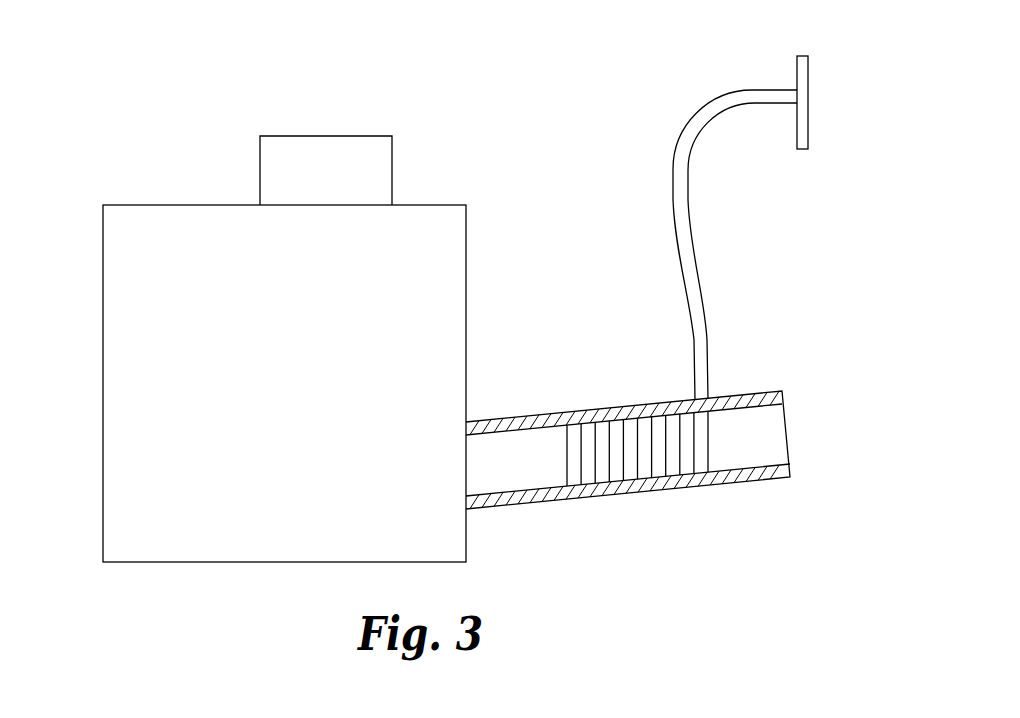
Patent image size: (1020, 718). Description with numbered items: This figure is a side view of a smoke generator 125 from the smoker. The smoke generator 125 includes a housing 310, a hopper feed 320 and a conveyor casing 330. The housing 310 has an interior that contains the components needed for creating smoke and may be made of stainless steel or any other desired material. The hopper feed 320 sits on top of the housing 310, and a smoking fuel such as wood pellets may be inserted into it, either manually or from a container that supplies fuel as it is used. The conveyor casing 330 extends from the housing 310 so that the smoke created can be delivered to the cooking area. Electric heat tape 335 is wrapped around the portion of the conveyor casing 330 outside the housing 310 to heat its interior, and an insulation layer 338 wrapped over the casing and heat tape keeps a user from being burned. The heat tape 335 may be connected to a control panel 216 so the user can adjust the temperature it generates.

The smoke generator 125 is at (135, 86).
The housing 310 is at (148, 302).
The hopper feed 320 is at (373, 172).
The conveyor casing 330 is at (735, 425).
The electric heat tape 335 is at (632, 440).
The insulation layer 338 is at (717, 479).
The control panel 216 is at (802, 78).